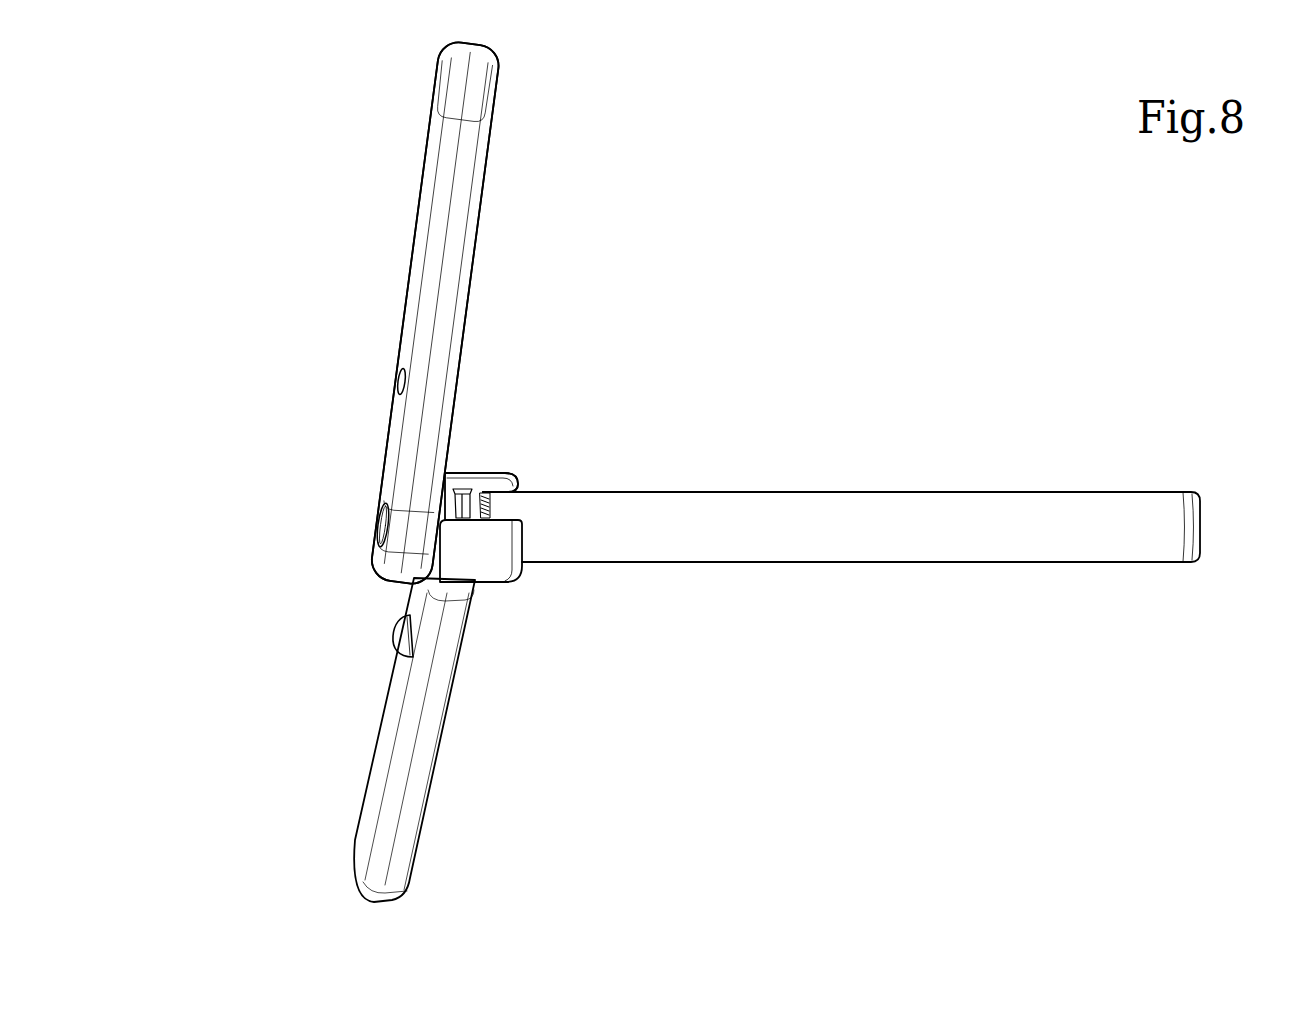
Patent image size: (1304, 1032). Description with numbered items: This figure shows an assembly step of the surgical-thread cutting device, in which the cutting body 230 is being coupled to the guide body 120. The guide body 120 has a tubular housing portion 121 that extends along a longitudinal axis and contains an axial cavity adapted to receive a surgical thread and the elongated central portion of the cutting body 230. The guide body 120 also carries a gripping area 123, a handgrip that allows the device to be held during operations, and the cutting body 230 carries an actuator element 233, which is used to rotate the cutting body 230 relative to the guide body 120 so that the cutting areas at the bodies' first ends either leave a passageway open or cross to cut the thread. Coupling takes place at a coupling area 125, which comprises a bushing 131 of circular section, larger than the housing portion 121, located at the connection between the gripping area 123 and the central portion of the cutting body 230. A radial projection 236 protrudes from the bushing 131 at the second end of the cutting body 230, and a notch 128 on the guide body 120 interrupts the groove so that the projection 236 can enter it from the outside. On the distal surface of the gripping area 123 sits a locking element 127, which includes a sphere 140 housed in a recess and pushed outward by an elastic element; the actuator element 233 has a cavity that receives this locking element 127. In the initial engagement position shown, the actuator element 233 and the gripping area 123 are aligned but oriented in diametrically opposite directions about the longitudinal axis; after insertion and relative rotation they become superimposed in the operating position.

The guide body 120 is at (698, 597).
The housing portion 121 is at (987, 513).
The gripping area 123 is at (432, 762).
The coupling area 125 is at (477, 440).
The locking element 127 is at (305, 656).
The notch 128 is at (502, 487).
The bushing 131 is at (490, 558).
The sphere 140 is at (398, 632).
The cutting body 230 is at (353, 288).
The actuator element 233 is at (483, 152).
The radial projection 236 is at (465, 490).